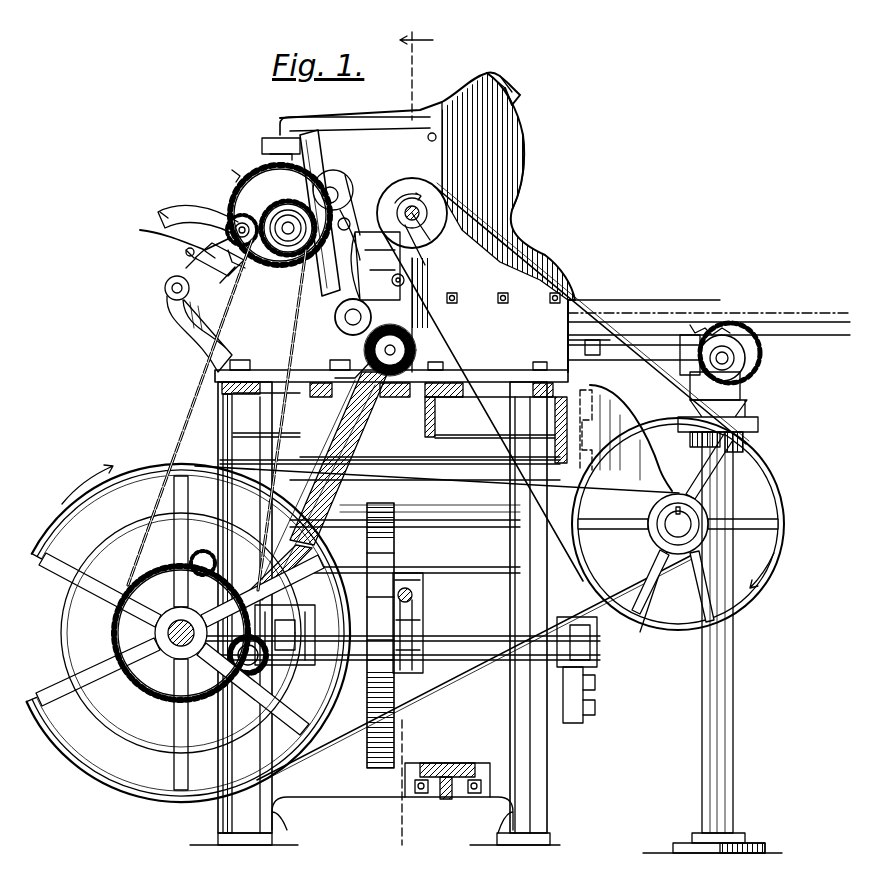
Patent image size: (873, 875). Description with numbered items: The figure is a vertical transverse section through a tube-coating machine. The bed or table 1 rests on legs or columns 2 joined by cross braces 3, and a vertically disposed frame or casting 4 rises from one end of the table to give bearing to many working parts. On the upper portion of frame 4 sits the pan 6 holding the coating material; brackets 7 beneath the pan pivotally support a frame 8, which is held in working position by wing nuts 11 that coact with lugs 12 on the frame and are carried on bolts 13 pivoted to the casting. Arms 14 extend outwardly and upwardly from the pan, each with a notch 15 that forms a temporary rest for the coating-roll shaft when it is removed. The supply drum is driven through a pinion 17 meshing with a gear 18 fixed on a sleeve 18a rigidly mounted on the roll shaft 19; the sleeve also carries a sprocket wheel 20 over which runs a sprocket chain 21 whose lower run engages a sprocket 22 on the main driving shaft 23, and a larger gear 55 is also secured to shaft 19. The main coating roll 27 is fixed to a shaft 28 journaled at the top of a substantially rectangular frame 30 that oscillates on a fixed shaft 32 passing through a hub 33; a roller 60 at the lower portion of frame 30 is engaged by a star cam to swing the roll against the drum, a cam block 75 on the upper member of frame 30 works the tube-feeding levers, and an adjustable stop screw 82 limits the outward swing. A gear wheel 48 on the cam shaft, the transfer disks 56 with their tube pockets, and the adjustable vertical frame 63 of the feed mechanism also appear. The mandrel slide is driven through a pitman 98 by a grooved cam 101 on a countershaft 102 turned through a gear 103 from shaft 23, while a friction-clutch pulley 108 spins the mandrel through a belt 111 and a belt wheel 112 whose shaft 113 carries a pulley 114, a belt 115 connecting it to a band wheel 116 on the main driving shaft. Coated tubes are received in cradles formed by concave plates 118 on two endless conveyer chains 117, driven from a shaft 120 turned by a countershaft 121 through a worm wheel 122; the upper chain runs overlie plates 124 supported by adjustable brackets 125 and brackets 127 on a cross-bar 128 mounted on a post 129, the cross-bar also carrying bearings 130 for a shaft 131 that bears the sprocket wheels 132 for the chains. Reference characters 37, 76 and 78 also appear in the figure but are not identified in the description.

The bed 1 is at (403, 420).
The legs 2 is at (576, 772).
The cross braces 3 is at (368, 803).
The frame 4 is at (500, 222).
The pan 6 is at (237, 261).
The brackets 7 is at (175, 301).
The frame 8 is at (150, 232).
The wing nuts 11 is at (186, 255).
The lugs 12 is at (192, 262).
The bolts 13 is at (196, 256).
The arms 14 is at (195, 210).
The notch 15 is at (168, 213).
The pinion 17 is at (222, 210).
The gear 18 is at (258, 175).
The sleeve 18a is at (287, 222).
The roll shaft 19 is at (290, 232).
The sprocket wheel 20 is at (300, 268).
The sprocket chain 21 is at (195, 395).
The sprocket 22 is at (100, 630).
The main driving shaft 23 is at (140, 675).
The main coating roll 27 is at (352, 178).
The shaft 28 is at (340, 175).
The frame 30 is at (330, 135).
The fixed shaft 32 is at (348, 320).
The hub 33 is at (420, 206).
The link 37 is at (350, 195).
The gear wheel 48 is at (350, 215).
The gear 55 is at (238, 176).
The disk members 56 is at (400, 265).
The roller 60 is at (398, 286).
The vertical frame 63 is at (525, 228).
The cam block 75 is at (322, 120).
The hole 76 is at (437, 137).
The frame top 78 is at (408, 130).
The stop screw 82 is at (270, 137).
The pitman 98 is at (412, 592).
The cam 101 is at (368, 552).
The countershaft 102 is at (460, 634).
The gear 103 is at (210, 553).
The pulley 108 is at (420, 238).
The belt 111 is at (590, 315).
The belt wheel 112 is at (650, 633).
The shaft 113 is at (640, 560).
The pulley 114 is at (665, 523).
The belt 115 is at (400, 476).
The band wheel 116 is at (97, 478).
The conveyer chains 117 is at (672, 320).
The plates 118 is at (710, 325).
The shaft 120 is at (390, 340).
The countershaft 121 is at (335, 470).
The worm wheel 122 is at (249, 676).
The plates 124 is at (548, 340).
The brackets 125 is at (598, 352).
The brackets 127 is at (704, 367).
The cross-bar 128 is at (745, 396).
The post 129 is at (728, 508).
The bearings 130 is at (712, 613).
The shaft 131 is at (729, 351).
The sprocket wheels 132 is at (735, 325).